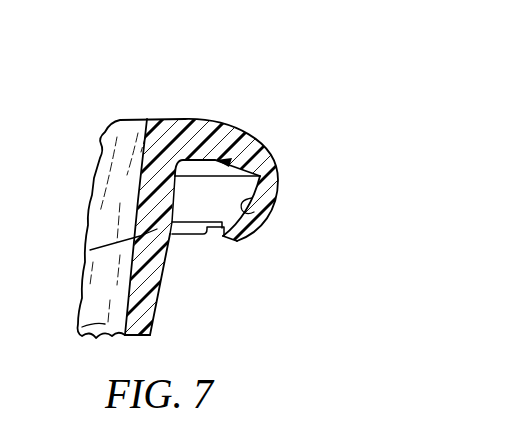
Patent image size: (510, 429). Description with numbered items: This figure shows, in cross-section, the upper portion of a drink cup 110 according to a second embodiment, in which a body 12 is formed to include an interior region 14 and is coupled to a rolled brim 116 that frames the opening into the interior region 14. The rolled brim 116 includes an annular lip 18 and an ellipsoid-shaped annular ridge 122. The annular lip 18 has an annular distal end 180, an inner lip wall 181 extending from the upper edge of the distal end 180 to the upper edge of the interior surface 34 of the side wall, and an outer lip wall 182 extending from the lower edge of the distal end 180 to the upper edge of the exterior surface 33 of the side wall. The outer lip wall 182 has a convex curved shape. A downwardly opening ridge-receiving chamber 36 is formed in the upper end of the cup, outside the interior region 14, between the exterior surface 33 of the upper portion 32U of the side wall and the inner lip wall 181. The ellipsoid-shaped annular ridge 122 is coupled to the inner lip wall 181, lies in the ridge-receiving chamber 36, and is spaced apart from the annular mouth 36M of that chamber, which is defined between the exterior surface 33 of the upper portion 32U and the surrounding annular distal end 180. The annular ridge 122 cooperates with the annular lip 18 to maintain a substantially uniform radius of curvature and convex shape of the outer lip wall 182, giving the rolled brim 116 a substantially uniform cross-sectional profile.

The drink cup 110 is at (123, 120).
The interior region 14 is at (147, 144).
The annular lip 18 is at (213, 120).
The rolled brim 116 is at (287, 72).
The ellipsoid-shaped annular ridge 122 is at (188, 178).
The ridge-receiving chamber 36 is at (234, 188).
The outer lip wall 182 is at (262, 196).
The inner lip wall 181 is at (240, 215).
The annular distal end 180 is at (207, 237).
The annular mouth 36M is at (185, 243).
The body 12 is at (158, 295).
The exterior surface 33 is at (152, 318).
The interior surface 34 is at (82, 327).
The upper portion 32U is at (90, 250).